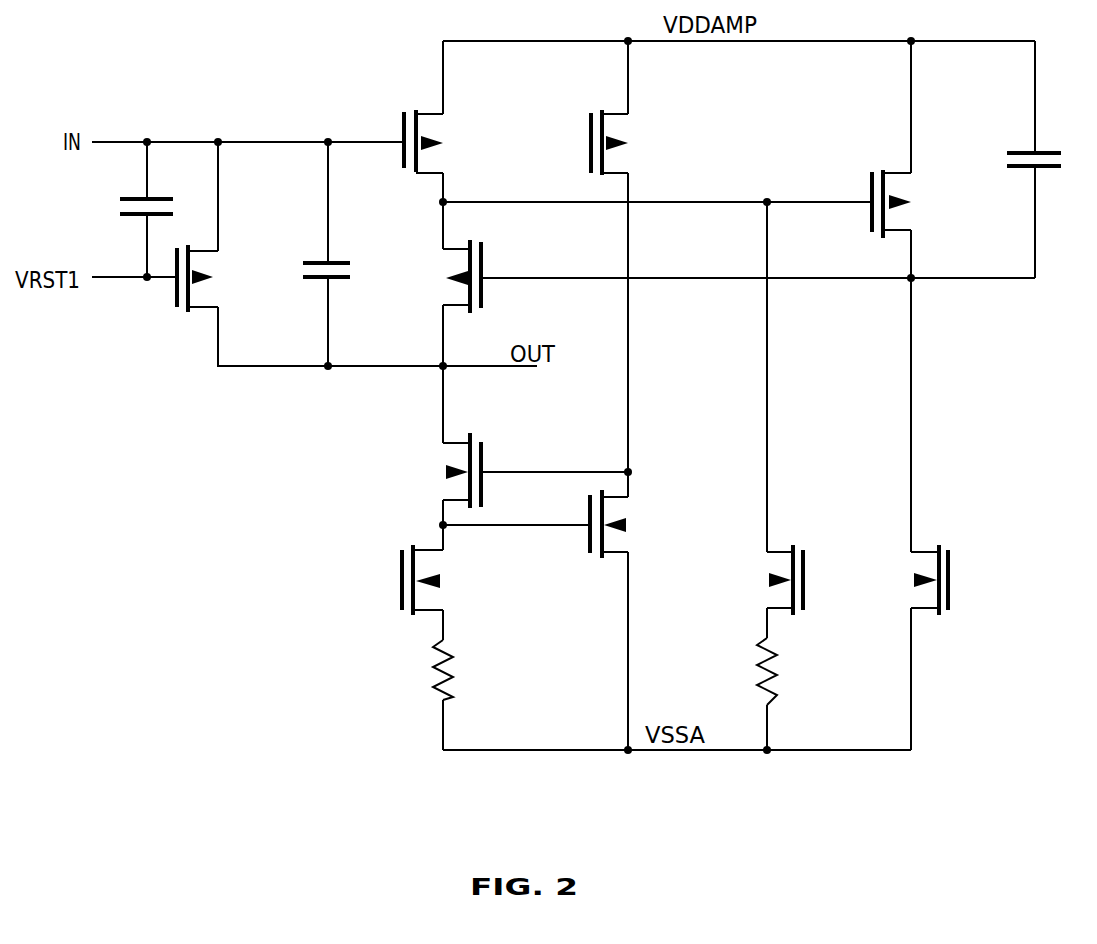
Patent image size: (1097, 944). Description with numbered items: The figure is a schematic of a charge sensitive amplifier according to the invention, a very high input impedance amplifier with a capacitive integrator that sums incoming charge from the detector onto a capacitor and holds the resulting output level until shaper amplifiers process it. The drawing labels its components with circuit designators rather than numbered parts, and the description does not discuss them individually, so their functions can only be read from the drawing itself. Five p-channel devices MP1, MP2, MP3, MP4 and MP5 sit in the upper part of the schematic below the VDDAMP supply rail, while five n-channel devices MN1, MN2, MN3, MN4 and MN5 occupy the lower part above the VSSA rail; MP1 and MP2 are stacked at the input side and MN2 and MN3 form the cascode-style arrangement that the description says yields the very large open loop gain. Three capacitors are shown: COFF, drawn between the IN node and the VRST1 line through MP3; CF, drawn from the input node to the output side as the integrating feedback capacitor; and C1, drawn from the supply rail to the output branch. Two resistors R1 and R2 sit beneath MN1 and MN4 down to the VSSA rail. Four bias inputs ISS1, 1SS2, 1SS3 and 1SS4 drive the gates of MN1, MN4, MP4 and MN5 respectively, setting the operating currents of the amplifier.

The PMOS transistor MP1 is at (427, 154).
The PMOS transistor MP2 is at (459, 289).
The PMOS reset transistor MP3 is at (222, 271).
The PMOS transistor MP4 is at (634, 130).
The PMOS transistor MP5 is at (886, 191).
The NMOS transistor MN1 is at (448, 584).
The NMOS transistor MN2 is at (433, 465).
The NMOS transistor MN3 is at (639, 532).
The NMOS transistor MN4 is at (780, 569).
The NMOS transistor MN5 is at (919, 569).
The offset capacitor COFF (11f) COFF is at (125, 209).
The feedback capacitor CF (13.3f) CF is at (344, 272).
The compensation capacitor C1 (1p) C1 is at (1026, 161).
The resistor R1 (2500) R1 is at (472, 670).
The resistor R2 (2000) R2 is at (793, 671).
The bias current input ISS1 is at (402, 581).
The bias current input 1SS2 is at (837, 580).
The bias current input 1SS3 is at (591, 143).
The bias current input 1SS4 is at (948, 580).